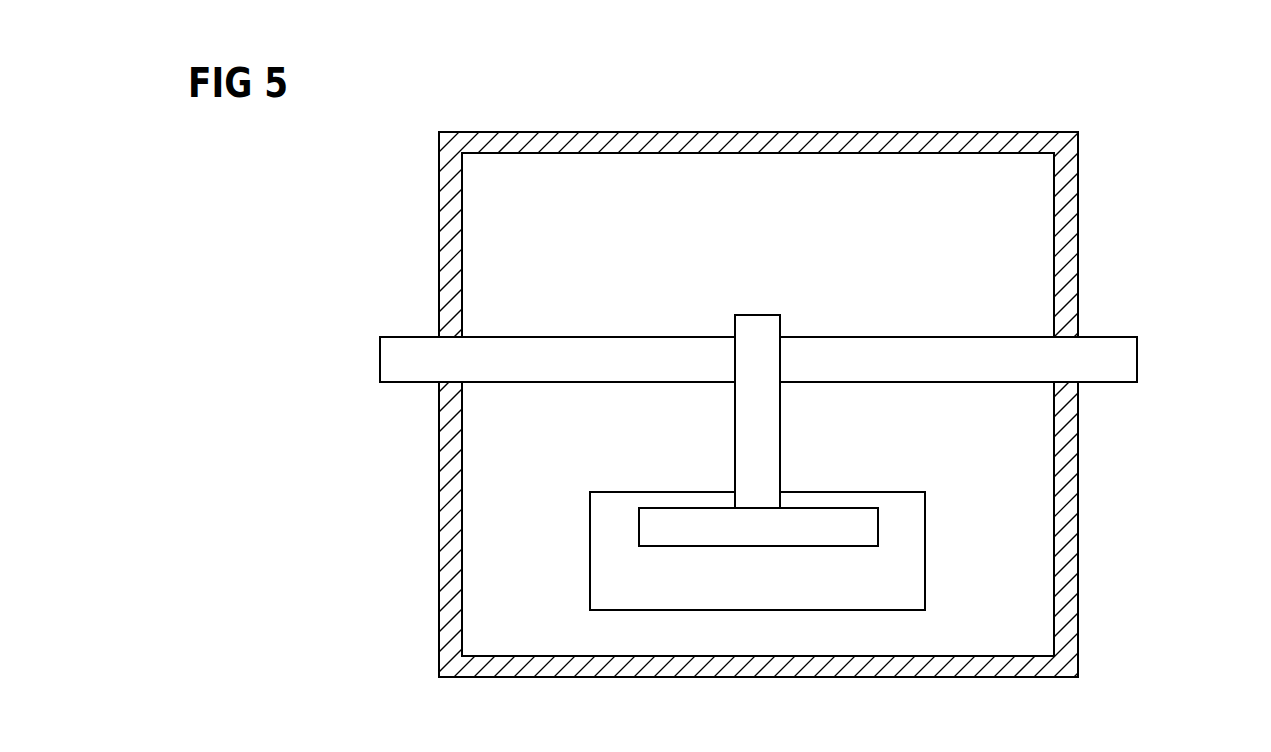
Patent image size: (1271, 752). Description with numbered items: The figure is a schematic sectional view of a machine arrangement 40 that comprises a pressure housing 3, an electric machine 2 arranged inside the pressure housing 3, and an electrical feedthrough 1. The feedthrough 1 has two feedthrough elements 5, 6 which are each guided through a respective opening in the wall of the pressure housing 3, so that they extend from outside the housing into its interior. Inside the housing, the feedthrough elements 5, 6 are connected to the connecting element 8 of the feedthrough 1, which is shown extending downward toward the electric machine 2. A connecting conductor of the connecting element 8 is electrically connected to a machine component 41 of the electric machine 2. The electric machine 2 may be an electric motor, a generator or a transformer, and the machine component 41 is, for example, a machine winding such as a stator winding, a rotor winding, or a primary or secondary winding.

The machine arrangement 40 is at (1133, 153).
The pressure housing 3 is at (1079, 253).
The feedthrough element 5 is at (592, 336).
The feedthrough element 6 is at (910, 337).
The electrical feedthrough 1 is at (762, 301).
The connecting element 8 is at (781, 440).
The electric machine 2 is at (926, 560).
The machine component 41 is at (750, 547).